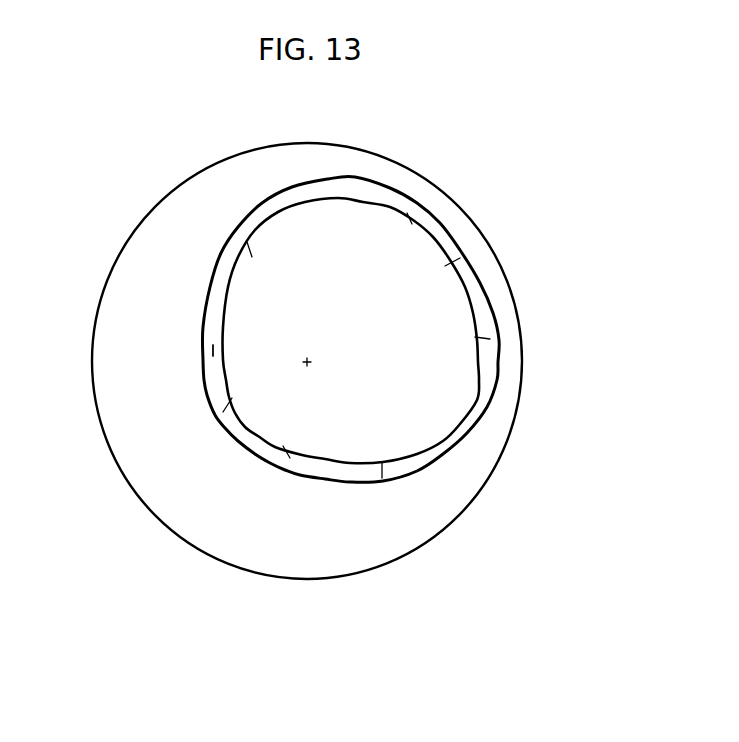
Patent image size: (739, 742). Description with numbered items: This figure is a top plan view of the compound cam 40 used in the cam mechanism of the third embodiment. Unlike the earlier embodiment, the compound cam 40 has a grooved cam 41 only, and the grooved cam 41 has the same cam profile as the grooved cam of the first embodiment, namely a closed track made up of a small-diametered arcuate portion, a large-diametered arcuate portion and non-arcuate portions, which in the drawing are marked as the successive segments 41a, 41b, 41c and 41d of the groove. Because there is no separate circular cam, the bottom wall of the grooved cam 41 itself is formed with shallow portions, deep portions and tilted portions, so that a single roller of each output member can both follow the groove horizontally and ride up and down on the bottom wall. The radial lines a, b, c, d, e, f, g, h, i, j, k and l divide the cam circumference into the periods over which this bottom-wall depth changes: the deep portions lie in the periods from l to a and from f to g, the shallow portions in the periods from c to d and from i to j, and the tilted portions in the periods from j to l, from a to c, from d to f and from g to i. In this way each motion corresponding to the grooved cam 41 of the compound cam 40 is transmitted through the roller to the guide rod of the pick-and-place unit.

The compound cam 40 is at (341, 531).
The grooved cam 41 is at (470, 449).
The cam segment a 41a is at (213, 352).
The cam segment b 41b is at (259, 426).
The cam segment c 41c is at (385, 470).
The cam segment d 41d is at (477, 337).
The cam period boundary a is at (248, 421).
The position line b is at (263, 437).
The cam period boundary c is at (284, 446).
The cam period boundary d is at (467, 403).
The position line e is at (478, 362).
The cam period boundary f is at (473, 316).
The cam period boundary g is at (427, 234).
The position line h is at (390, 205).
The cam period boundary i is at (347, 201).
The cam period boundary j is at (223, 340).
The position line k is at (223, 362).
The cam period boundary l is at (212, 388).